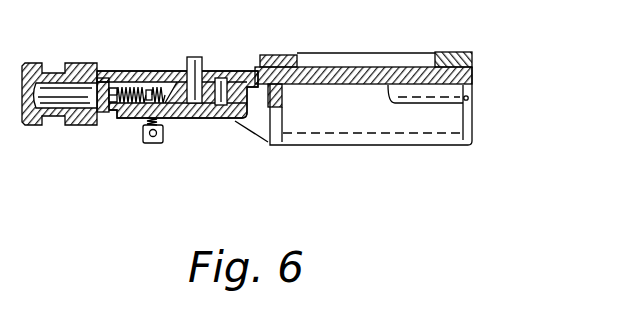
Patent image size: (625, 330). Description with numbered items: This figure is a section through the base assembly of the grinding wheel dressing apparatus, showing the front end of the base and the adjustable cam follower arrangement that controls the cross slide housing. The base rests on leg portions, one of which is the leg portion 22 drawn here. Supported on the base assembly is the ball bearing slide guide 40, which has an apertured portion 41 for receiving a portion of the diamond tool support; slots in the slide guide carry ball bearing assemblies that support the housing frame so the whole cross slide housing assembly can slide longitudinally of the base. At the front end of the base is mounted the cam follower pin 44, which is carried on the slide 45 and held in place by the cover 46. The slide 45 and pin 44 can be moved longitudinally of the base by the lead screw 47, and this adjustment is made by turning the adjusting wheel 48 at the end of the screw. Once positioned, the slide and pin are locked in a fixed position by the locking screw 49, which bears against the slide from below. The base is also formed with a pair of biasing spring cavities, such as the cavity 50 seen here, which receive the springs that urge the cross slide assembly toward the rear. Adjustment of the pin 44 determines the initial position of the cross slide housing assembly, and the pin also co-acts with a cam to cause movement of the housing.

The leg portion 22 is at (447, 118).
The ball bearing slide guide 40 is at (272, 56).
The apertured portion 41 is at (394, 38).
The cam follower pin 44 is at (200, 58).
The slide 45 is at (167, 78).
The cover 46 is at (222, 116).
The lead screw 47 is at (105, 88).
The adjusting wheel 48 is at (70, 70).
The locking screw 49 is at (142, 135).
The biasing spring cavity 50 is at (474, 82).